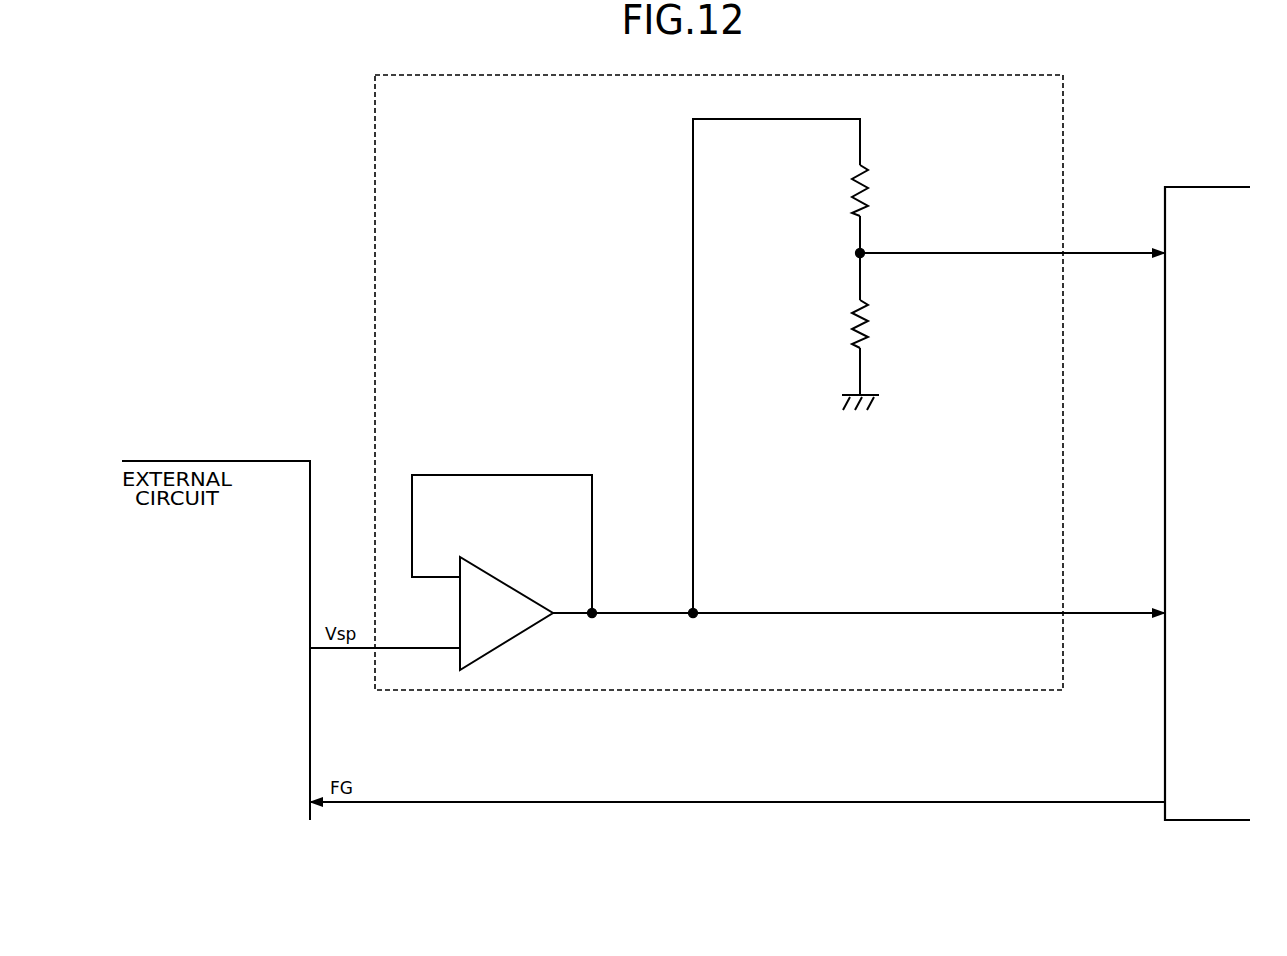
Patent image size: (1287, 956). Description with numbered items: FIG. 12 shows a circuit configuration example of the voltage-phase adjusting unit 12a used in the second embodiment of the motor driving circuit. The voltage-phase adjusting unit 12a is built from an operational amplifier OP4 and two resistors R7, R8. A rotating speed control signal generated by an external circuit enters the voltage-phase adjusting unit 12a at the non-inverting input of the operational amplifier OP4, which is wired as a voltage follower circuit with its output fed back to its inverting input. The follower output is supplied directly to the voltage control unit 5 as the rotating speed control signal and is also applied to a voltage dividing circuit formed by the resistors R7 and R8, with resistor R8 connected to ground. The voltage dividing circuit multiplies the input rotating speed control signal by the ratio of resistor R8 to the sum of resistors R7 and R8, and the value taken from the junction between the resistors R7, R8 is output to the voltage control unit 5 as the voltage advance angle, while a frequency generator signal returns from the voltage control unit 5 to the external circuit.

The voltage-phase adjusting unit 12a is at (1017, 77).
The voltage control unit 5 is at (1181, 187).
The resistor R7 is at (840, 190).
The resistor R8 is at (840, 324).
The operational amplifier OP4 is at (504, 572).